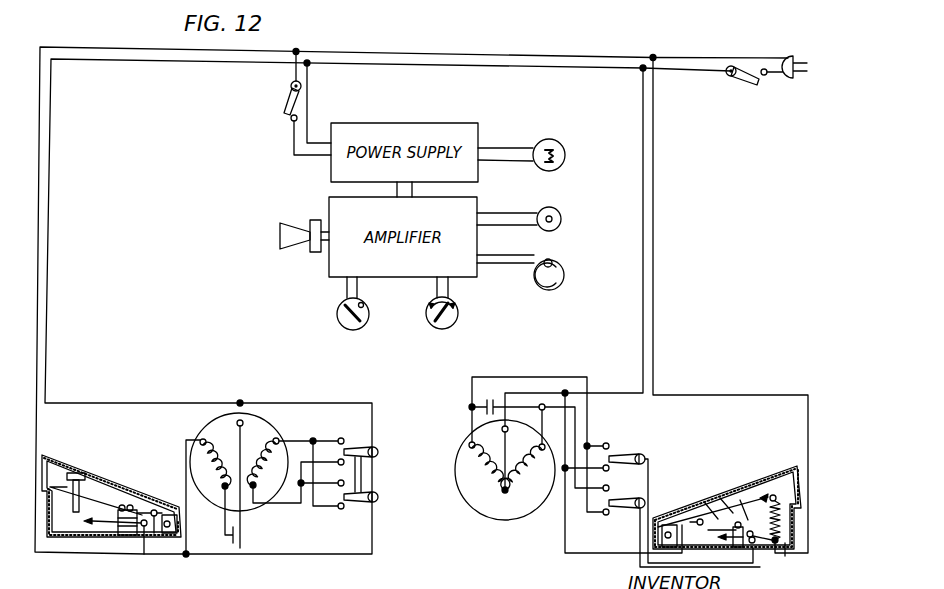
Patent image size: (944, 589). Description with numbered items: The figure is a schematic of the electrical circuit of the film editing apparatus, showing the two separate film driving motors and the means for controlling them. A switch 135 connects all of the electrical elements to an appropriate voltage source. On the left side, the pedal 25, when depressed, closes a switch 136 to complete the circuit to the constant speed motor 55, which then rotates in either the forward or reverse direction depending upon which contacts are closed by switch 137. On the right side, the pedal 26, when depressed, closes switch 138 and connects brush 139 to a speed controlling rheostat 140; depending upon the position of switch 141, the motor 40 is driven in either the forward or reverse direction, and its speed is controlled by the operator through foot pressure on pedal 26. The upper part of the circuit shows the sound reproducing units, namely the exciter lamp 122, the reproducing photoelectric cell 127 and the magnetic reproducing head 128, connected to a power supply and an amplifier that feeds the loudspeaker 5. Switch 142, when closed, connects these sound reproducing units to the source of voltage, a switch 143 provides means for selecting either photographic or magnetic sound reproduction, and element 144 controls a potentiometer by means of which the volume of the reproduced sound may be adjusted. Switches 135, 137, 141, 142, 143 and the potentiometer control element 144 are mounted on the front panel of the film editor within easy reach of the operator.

The loudspeaker 5 is at (293, 240).
The pedal 25 is at (115, 483).
The pedal 26 is at (772, 472).
The motor 40 is at (482, 500).
The constant speed motor 55 is at (250, 507).
The exciter lamp 122 is at (567, 160).
The reproducing photoelectric cell 127 is at (566, 271).
The magnetic reproducing head 128 is at (562, 212).
The switch 135 is at (746, 86).
The switch 136 is at (103, 518).
The switch 137 is at (378, 452).
The switch 138 is at (728, 507).
The brush 139 is at (755, 500).
The speed controlling rheostat 140 is at (785, 546).
The switch 141 is at (648, 458).
The switch 142 is at (288, 98).
The switch 143 is at (337, 320).
The potentiometer control element 144 is at (455, 321).